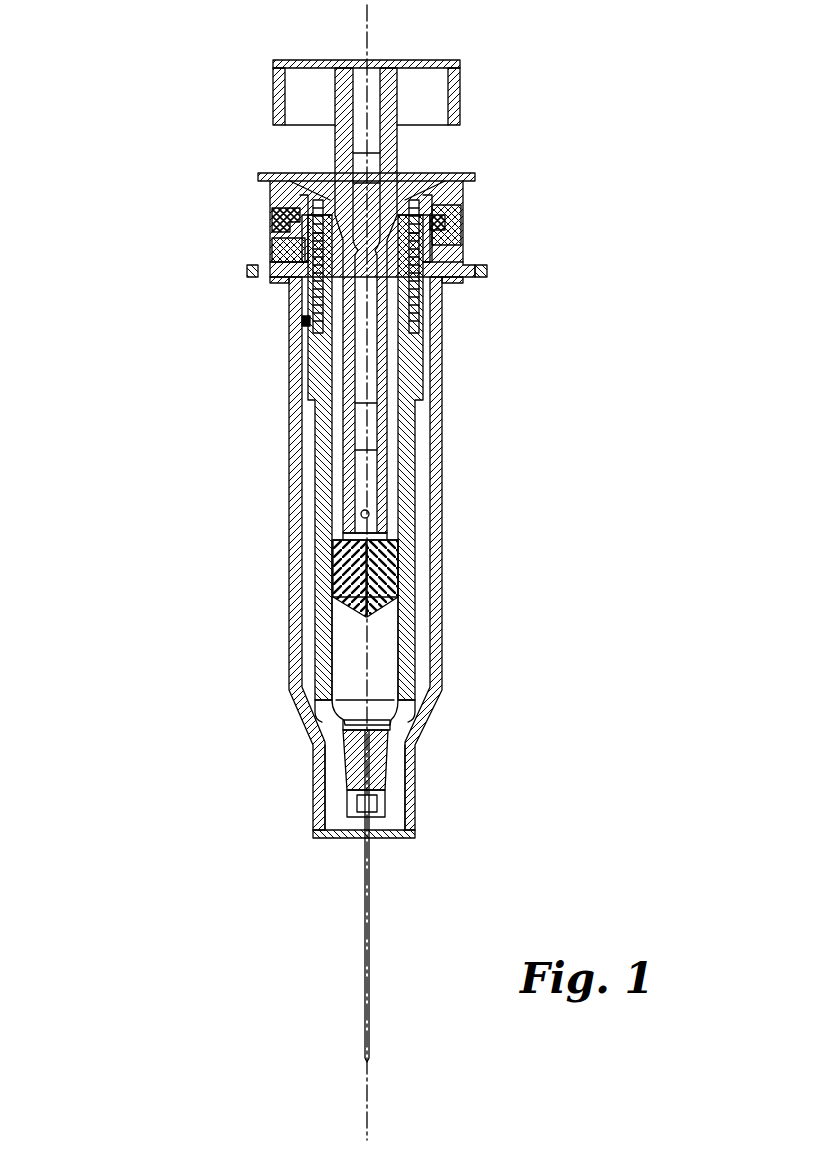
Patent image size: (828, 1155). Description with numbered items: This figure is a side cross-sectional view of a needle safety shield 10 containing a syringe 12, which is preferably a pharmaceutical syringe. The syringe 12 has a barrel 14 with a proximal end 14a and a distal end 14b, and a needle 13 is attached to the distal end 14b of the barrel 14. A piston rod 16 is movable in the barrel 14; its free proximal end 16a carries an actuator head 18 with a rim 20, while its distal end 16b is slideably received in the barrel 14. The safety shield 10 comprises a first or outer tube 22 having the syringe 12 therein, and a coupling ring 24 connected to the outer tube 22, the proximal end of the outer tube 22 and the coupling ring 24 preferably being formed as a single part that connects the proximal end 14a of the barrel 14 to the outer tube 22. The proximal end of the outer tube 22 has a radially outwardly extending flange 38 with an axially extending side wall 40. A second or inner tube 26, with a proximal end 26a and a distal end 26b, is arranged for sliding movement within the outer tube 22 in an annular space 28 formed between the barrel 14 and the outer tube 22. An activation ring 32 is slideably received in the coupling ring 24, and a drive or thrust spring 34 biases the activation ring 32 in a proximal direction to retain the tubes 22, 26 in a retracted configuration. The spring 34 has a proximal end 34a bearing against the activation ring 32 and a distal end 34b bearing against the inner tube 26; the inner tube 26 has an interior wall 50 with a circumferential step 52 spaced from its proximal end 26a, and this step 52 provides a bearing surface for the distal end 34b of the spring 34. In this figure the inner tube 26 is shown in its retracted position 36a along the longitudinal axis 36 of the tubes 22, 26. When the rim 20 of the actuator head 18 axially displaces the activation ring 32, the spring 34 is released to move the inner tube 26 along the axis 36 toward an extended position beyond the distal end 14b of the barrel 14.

The needle safety shield 10 is at (183, 362).
The syringe 12 is at (427, 585).
The needle 13 is at (367, 930).
The barrel 14 is at (402, 505).
The proximal end of barrel 14a is at (285, 196).
The distal end of barrel 14b is at (330, 737).
The piston rod 16 is at (397, 155).
The free proximal end of piston rod 16a is at (325, 150).
The distal end of piston rod 16b is at (333, 515).
The actuator head 18 is at (293, 62).
The rim 20 is at (273, 100).
The first tube 22 is at (437, 418).
The coupling ring 24 is at (478, 250).
The second tube 26 is at (417, 545).
The proximal end of inner tube 26a is at (477, 215).
The distal end of inner tube 26b is at (418, 770).
The annular space 28 is at (305, 465).
The activation ring 32 is at (275, 225).
The drive spring 34 is at (428, 307).
The proximal end of spring 34a is at (472, 178).
The distal end of spring 34b is at (318, 325).
The longitudinal axis 36 is at (367, 658).
The retracted position 36a is at (350, 838).
The flange 38 is at (462, 283).
The side wall 40 is at (487, 272).
The interior wall 50 is at (258, 238).
The circumferential step 52 is at (302, 320).